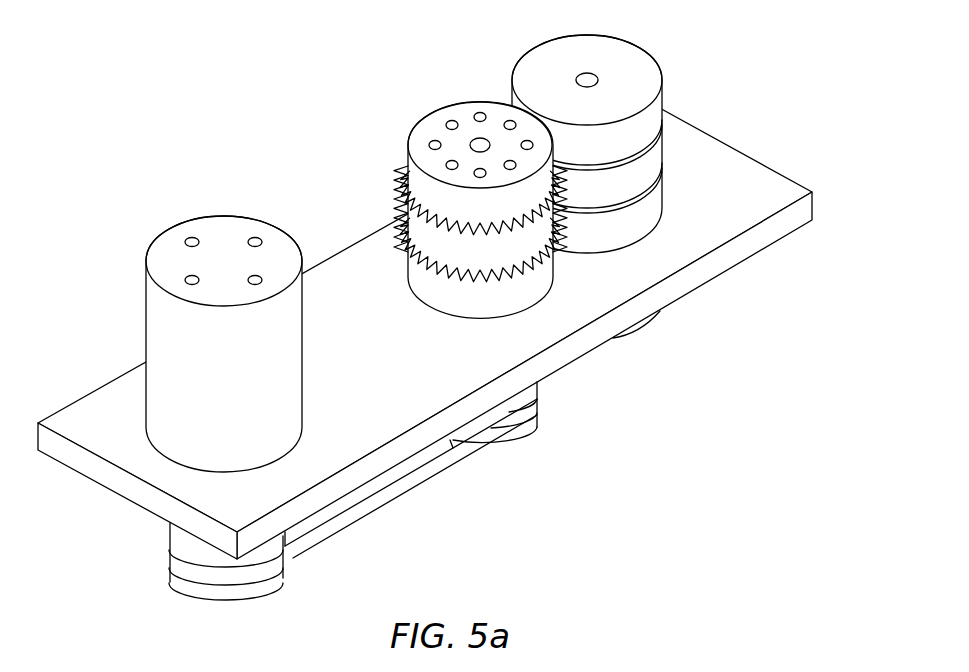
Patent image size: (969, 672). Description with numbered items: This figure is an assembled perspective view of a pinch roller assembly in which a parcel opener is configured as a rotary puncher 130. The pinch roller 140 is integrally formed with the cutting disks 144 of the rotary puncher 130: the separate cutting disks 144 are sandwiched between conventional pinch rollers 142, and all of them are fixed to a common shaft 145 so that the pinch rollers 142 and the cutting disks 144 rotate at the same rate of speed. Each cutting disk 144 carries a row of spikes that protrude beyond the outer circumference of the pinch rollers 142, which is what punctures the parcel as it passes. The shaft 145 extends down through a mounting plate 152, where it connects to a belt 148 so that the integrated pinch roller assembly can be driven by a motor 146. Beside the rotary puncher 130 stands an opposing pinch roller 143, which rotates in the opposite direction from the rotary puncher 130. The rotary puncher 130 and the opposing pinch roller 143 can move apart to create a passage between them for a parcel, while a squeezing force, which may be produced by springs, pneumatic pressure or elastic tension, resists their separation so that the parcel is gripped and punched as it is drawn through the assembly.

The rotary puncher 130 is at (188, 93).
The pinch roller 140 is at (453, 345).
The pinch rollers 142 is at (437, 192).
The opposing pinch roller 143 is at (679, 128).
The cutting disks 144 is at (388, 186).
The shaft 145 is at (478, 137).
The motor 146 is at (118, 323).
The belt 148 is at (425, 512).
The mounting plate 152 is at (822, 209).